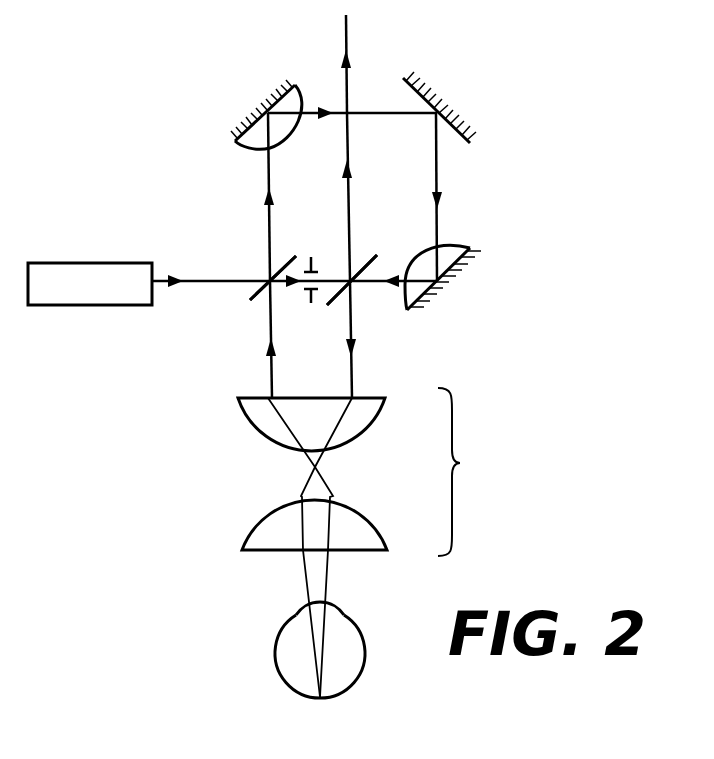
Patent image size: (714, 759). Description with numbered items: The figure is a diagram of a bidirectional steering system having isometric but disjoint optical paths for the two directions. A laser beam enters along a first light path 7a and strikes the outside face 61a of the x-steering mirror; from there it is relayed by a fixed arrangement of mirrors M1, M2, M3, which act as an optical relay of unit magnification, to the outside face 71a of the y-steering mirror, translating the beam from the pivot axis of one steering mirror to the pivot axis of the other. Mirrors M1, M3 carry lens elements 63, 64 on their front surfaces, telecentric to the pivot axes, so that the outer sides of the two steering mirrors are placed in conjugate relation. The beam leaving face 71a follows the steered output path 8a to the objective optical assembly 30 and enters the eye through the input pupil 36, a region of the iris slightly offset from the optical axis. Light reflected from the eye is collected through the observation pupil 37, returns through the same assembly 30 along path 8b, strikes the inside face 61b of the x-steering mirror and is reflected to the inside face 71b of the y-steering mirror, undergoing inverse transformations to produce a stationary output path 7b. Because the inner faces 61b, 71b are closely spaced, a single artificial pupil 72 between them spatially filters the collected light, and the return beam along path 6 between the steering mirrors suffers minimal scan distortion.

The beam path 6 is at (365, 197).
The first light path 7a is at (221, 281).
The output path 7b is at (347, 31).
The steered output path 8a is at (352, 358).
The return path 8b is at (270, 376).
The objective optical assembly 30 is at (366, 472).
The input pupil 36 is at (302, 604).
The observation pupil 37 is at (336, 604).
The outside face of mirror 60 61a is at (252, 300).
The inside face of mirror 60 61b is at (258, 297).
The lens element 63 is at (249, 150).
The lens element 64 is at (462, 250).
The outside face of mirror 70 71a is at (330, 306).
The inside face of mirror 70 71b is at (368, 258).
The artificial pupil 72 is at (314, 256).
The fixed mirror M1 is at (267, 96).
The fixed mirror M2 is at (433, 90).
The fixed mirror M3 is at (468, 268).